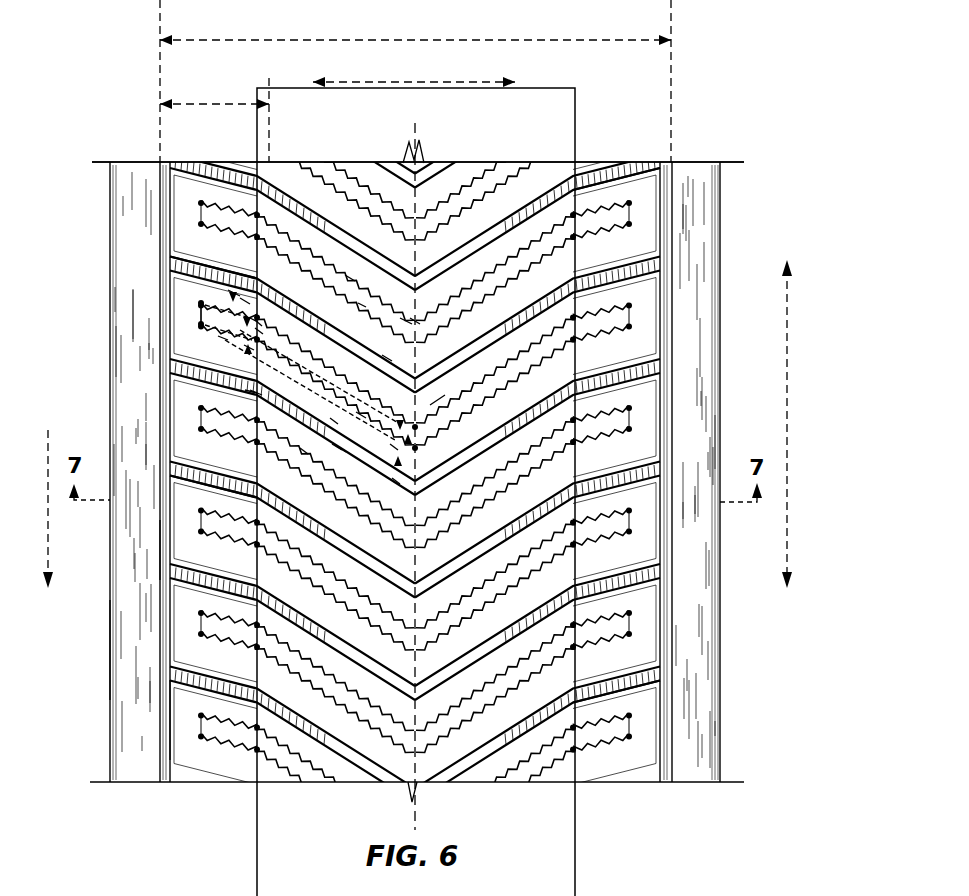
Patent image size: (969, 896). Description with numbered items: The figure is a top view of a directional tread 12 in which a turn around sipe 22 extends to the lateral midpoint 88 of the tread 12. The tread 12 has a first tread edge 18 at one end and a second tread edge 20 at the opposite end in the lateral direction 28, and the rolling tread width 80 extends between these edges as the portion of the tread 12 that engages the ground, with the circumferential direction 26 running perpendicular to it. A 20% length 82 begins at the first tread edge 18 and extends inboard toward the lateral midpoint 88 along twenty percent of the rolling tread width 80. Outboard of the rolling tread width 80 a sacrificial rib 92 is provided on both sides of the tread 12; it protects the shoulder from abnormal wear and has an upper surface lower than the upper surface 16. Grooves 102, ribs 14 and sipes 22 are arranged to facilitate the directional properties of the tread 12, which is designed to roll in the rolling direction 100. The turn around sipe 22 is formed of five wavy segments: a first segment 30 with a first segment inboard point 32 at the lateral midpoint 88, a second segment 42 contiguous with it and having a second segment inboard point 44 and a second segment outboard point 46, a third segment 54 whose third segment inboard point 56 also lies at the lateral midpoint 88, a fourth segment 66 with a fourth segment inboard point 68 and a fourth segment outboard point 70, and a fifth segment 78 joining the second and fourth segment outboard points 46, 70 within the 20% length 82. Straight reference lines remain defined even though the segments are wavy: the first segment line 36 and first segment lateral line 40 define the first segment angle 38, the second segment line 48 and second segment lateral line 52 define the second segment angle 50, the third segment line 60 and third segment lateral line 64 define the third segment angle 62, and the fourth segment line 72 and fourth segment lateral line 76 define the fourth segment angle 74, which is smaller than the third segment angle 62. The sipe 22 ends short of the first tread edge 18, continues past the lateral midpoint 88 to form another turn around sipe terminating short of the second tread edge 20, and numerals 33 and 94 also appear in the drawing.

The tread 12 is at (736, 37).
The rib 14 is at (173, 478).
The upper surface 16 is at (613, 186).
The first tread edge 18 is at (170, 712).
The second tread edge 20 is at (662, 698).
The turn around sipe 22 is at (405, 320).
The circumferential direction 26 is at (787, 427).
The lateral direction 28 is at (413, 82).
The first segment 30 is at (304, 452).
The first segment inboard point 32 is at (415, 448).
The sipe segment 33 is at (340, 450).
The first segment line 36 is at (333, 420).
The first segment angle 38 is at (395, 482).
The first segment lateral line 40 is at (393, 447).
The second segment 42 is at (252, 393).
The second segment inboard point 44 is at (340, 450).
The second segment outboard point 46 is at (202, 325).
The second segment line 48 is at (250, 393).
The second segment angle 50 is at (248, 347).
The second segment lateral line 52 is at (222, 338).
The third segment 54 is at (387, 358).
The third segment inboard point 56 is at (252, 318).
The third segment line 60 is at (360, 302).
The third segment angle 62 is at (415, 321).
The third segment lateral line 64 is at (360, 415).
The fourth segment 66 is at (243, 300).
The fourth segment inboard point 68 is at (254, 319).
The fourth segment outboard point 70 is at (203, 303).
The fourth segment line 72 is at (348, 268).
The fourth segment angle 74 is at (232, 292).
The fourth segment lateral line 76 is at (258, 330).
The fifth segment 78 is at (203, 318).
The rolling tread width 80 is at (433, 40).
The 20% length 82 is at (198, 104).
The lateral midpoint 88 is at (415, 133).
The sacrificial rib 92 is at (130, 648).
The shoulder edge 94 is at (160, 548).
The rolling direction 100 is at (47, 510).
The groove 102 is at (185, 238).